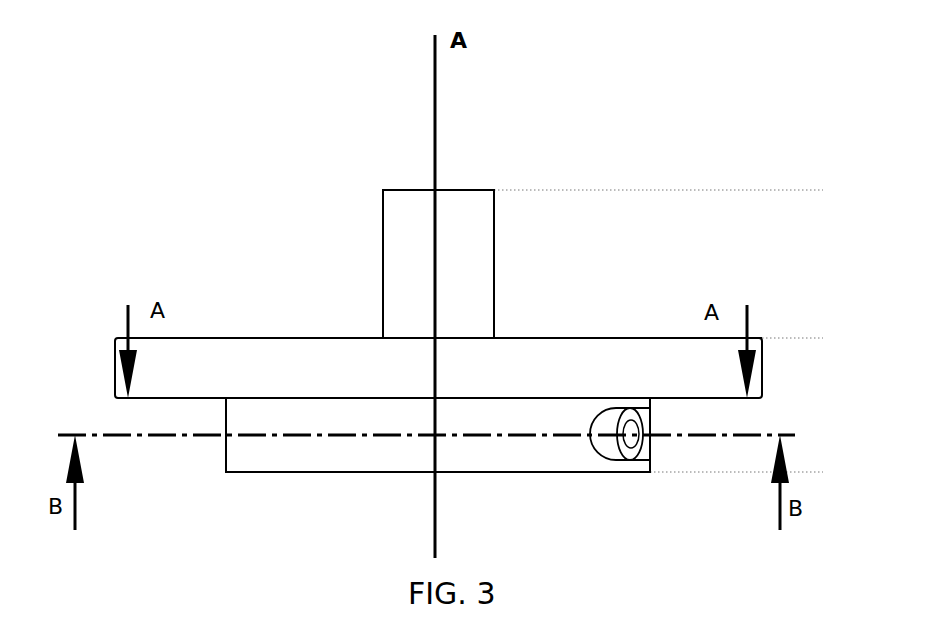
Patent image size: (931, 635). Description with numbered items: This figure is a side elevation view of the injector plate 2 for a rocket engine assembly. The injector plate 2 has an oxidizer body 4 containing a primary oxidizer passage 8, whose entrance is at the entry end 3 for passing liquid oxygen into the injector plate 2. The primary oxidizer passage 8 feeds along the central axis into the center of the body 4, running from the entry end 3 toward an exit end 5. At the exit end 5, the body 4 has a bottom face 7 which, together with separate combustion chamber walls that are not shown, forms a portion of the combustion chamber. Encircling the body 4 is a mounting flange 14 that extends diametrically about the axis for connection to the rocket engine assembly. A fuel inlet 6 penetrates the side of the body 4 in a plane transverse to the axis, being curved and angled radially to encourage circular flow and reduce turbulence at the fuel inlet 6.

The injector plate 2 is at (238, 315).
The entry end 3 is at (396, 149).
The oxidizer body 4 is at (417, 355).
The exit end 5 is at (377, 500).
The fuel inlet 6 is at (634, 450).
The bottom face 7 is at (477, 473).
The primary oxidizer passage 8 is at (447, 187).
The mounting flange 14 is at (715, 338).